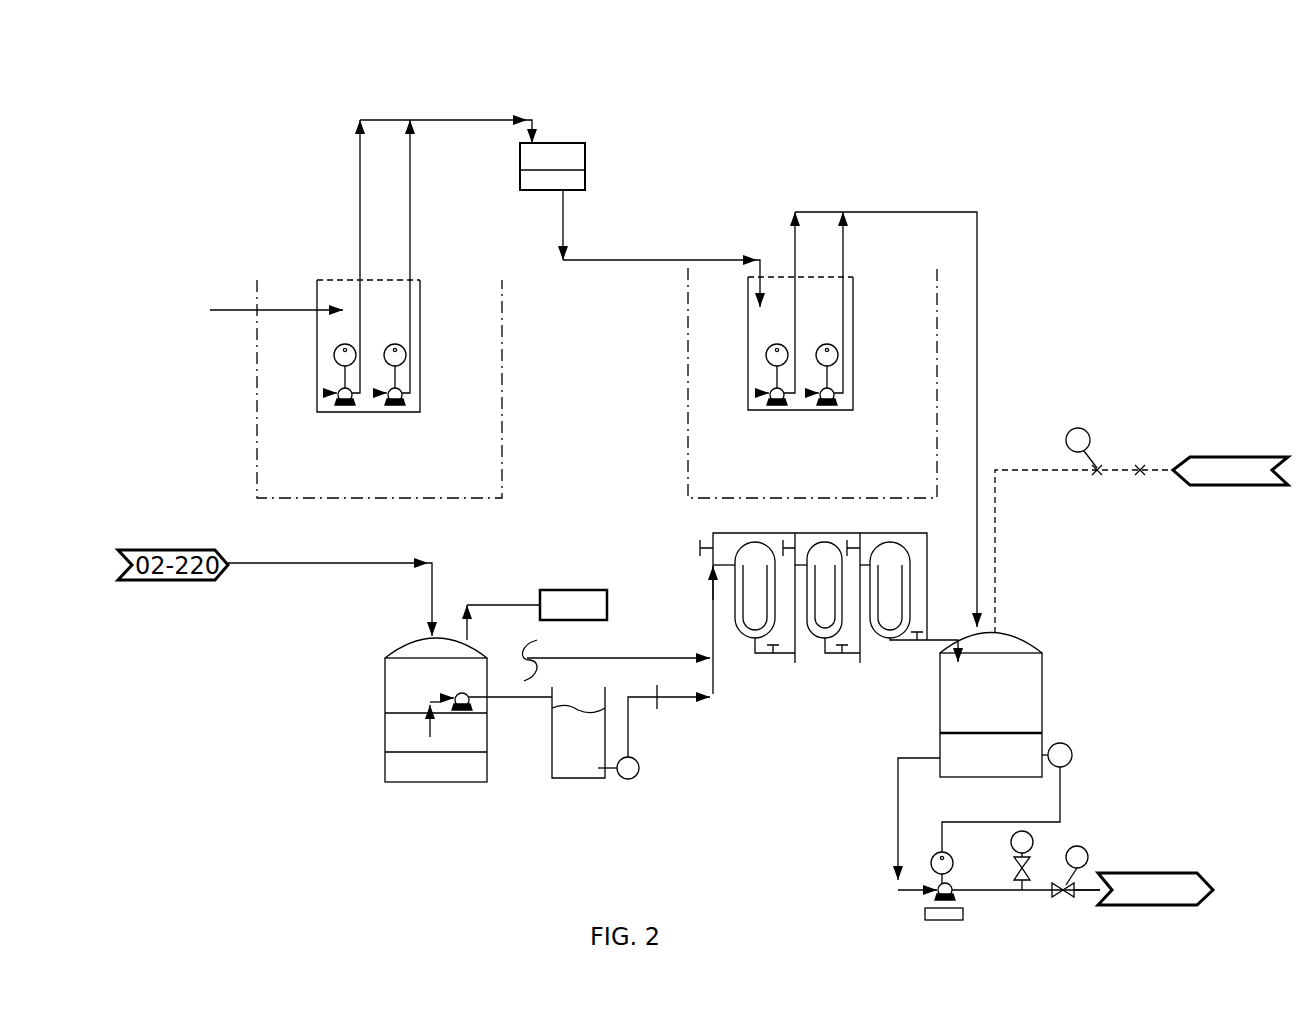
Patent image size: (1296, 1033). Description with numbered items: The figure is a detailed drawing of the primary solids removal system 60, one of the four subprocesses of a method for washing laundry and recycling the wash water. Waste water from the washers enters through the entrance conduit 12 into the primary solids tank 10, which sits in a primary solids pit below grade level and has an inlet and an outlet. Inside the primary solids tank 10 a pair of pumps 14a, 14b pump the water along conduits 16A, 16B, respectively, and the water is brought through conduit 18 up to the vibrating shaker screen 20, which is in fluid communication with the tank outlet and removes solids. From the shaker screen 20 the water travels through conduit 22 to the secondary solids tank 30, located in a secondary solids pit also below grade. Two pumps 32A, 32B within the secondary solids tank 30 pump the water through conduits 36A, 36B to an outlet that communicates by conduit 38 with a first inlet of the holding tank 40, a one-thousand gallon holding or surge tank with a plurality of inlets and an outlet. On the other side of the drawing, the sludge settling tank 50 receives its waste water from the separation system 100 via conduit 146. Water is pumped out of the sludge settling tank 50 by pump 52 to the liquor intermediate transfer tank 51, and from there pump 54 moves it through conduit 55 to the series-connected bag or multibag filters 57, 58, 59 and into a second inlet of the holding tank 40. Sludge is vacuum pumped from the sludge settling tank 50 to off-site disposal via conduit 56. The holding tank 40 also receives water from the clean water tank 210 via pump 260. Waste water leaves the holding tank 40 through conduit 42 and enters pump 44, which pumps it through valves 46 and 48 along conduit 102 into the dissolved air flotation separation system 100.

The primary solids removal system 60 is at (228, 180).
The primary solids tank 10 is at (390, 472).
The entrance conduit 12 is at (276, 297).
The pump 14a is at (338, 361).
The pump 14b is at (389, 361).
The conduit 16A is at (360, 232).
The conduit 16B is at (410, 228).
The conduit 18 is at (428, 118).
The vibrating shaker screen 20 is at (552, 166).
The conduit 22 is at (661, 248).
The secondary solids tank 30 is at (821, 472).
The pump 32A is at (772, 361).
The pump 32B is at (824, 361).
The conduit 36A is at (792, 260).
The conduit 36B is at (872, 250).
The conduit 38 is at (872, 211).
The holding tank 40 is at (1043, 687).
The conduit 42 is at (895, 792).
The pump 44 is at (950, 884).
The valve 46 is at (1025, 881).
The valve 48 is at (1060, 897).
The sludge settling tank 50 is at (372, 697).
The liquor intermediate transfer tank 51 is at (551, 752).
The pump 52 is at (460, 691).
The pump 54 is at (637, 779).
The conduit 55 is at (503, 697).
The conduit 56 is at (535, 607).
The bag filter 57 is at (750, 641).
The bag filter 58 is at (820, 641).
The bag filter 59 is at (885, 641).
The separation system 100 is at (1170, 871).
The conduit 102 is at (1088, 896).
The conduit 146 is at (366, 561).
The clean water tank 210 is at (1213, 488).
The pump 260 is at (1085, 428).